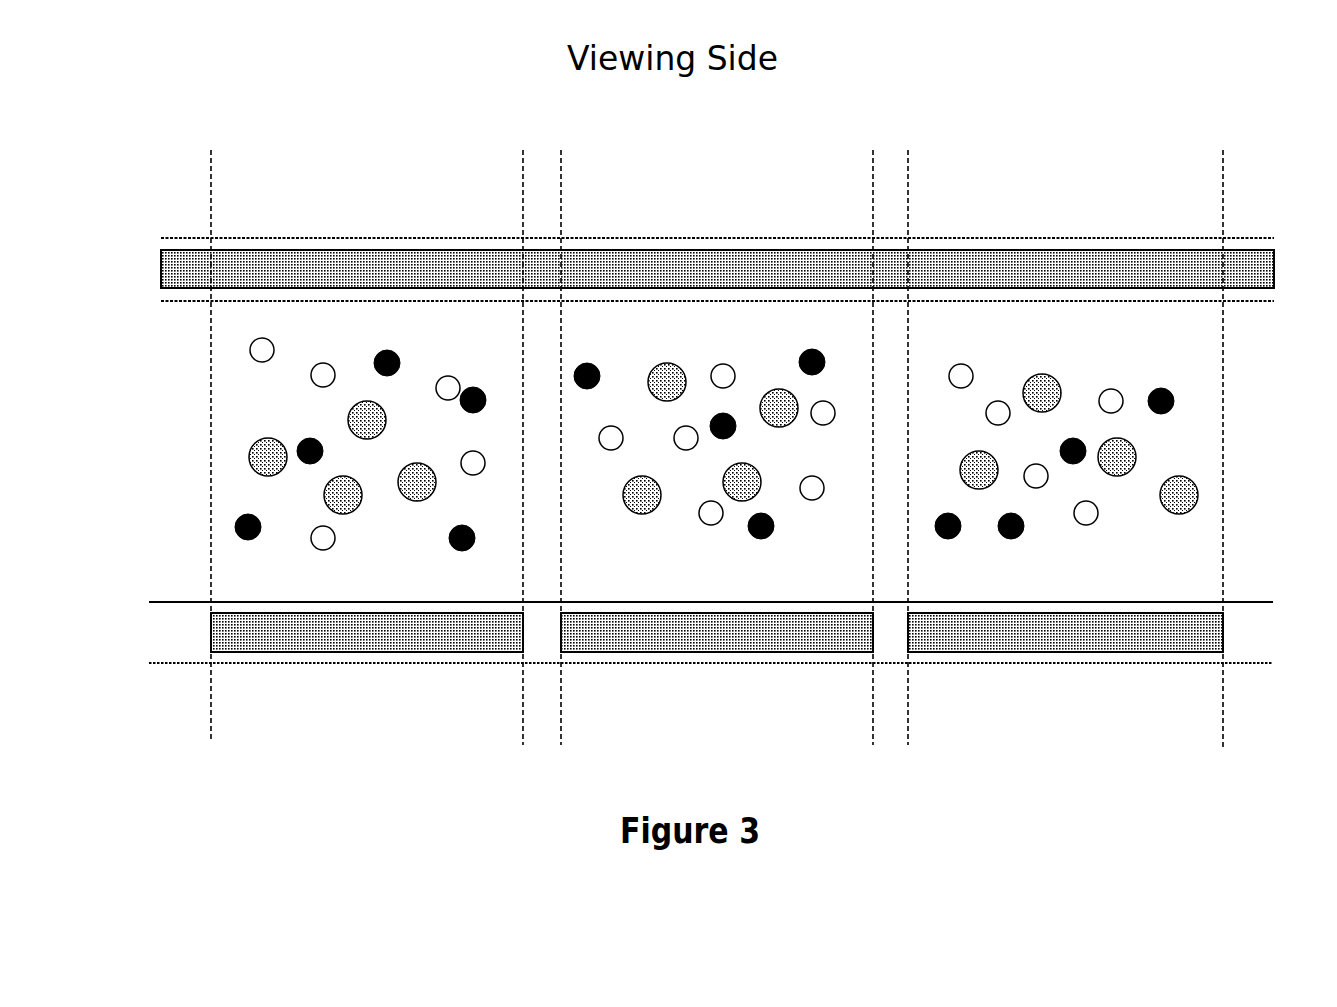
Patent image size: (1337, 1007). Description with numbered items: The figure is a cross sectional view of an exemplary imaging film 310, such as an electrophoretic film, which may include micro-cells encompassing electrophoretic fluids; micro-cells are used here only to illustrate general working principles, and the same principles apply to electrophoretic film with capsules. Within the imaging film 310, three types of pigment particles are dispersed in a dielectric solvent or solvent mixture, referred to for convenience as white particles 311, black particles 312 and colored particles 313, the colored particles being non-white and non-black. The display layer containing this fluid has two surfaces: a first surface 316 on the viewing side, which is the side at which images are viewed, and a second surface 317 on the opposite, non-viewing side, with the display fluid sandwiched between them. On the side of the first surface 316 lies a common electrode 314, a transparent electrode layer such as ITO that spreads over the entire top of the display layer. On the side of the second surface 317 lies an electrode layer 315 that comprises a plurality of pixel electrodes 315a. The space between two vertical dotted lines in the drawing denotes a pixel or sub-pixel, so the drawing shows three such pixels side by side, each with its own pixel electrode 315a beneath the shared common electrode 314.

The imaging film 310 is at (1232, 425).
The white particles 311 is at (240, 350).
The black particles 312 is at (228, 527).
The colored particles 313 is at (240, 450).
The common electrode 314 is at (648, 252).
The electrode layer 315 is at (694, 683).
The pixel electrodes 315a is at (373, 648).
The first surface 316 is at (782, 230).
The second surface 317 is at (736, 667).